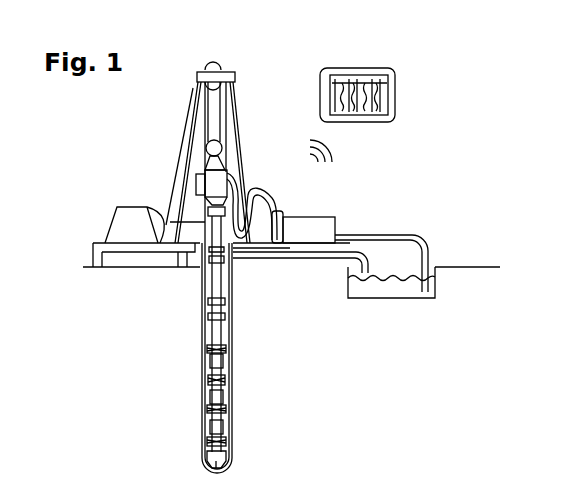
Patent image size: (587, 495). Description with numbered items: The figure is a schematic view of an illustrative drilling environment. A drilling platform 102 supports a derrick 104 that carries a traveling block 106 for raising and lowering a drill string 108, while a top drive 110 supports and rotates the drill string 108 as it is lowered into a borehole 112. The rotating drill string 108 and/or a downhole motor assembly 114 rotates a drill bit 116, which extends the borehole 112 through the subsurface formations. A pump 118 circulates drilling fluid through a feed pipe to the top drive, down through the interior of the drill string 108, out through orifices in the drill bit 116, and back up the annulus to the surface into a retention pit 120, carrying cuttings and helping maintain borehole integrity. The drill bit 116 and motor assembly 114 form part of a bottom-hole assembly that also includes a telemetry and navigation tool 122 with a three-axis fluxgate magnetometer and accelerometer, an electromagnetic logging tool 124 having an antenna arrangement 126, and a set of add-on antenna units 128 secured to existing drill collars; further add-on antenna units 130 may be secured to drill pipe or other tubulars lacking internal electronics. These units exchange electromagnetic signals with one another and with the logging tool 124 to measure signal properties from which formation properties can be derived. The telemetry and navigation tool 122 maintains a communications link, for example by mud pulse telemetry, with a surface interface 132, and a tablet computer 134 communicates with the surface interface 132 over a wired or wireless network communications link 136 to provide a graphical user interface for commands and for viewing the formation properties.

The drilling platform 102 is at (93, 250).
The derrick 104 is at (196, 88).
The traveling block 106 is at (206, 150).
The drill string 108 is at (212, 332).
The top drive 110 is at (211, 182).
The borehole 112 is at (234, 338).
The downhole motor assembly 114 is at (209, 426).
The drill bit 116 is at (207, 457).
The pump 118 is at (336, 228).
The retention pit 120 is at (348, 287).
The bottomhole assembly telemetry and navigation tool 122 is at (212, 356).
The electromagnetic logging tool 124 is at (209, 396).
The antenna arrangement 126 is at (225, 380).
The add-on antenna units 128 is at (226, 349).
The add-on antenna units 130 is at (208, 316).
The surface interface 132 is at (281, 212).
The tablet computer 134 is at (320, 90).
The network communications link 136 is at (334, 151).